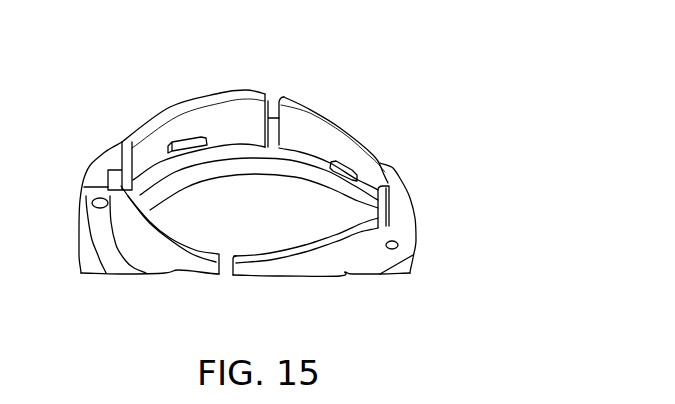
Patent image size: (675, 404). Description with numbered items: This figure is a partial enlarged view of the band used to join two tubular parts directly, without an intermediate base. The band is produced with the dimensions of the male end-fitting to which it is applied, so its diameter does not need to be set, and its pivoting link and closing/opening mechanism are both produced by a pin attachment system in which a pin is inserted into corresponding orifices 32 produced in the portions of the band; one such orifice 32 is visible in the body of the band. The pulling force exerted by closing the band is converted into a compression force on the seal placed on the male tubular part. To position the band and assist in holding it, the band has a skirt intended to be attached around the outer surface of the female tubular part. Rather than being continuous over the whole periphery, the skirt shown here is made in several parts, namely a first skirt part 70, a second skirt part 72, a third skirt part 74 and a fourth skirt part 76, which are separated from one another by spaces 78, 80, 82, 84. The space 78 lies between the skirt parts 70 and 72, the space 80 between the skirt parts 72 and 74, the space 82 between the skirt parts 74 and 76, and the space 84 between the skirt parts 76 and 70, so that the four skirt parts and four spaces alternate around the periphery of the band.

The skirt part 70 is at (243, 100).
The space 78 is at (283, 100).
The skirt part 72 is at (328, 143).
The space 84 is at (125, 165).
The space 80 is at (388, 212).
The orifice 32 is at (399, 245).
The skirt part 74 is at (355, 263).
The skirt part 76 is at (155, 253).
The space 82 is at (223, 276).